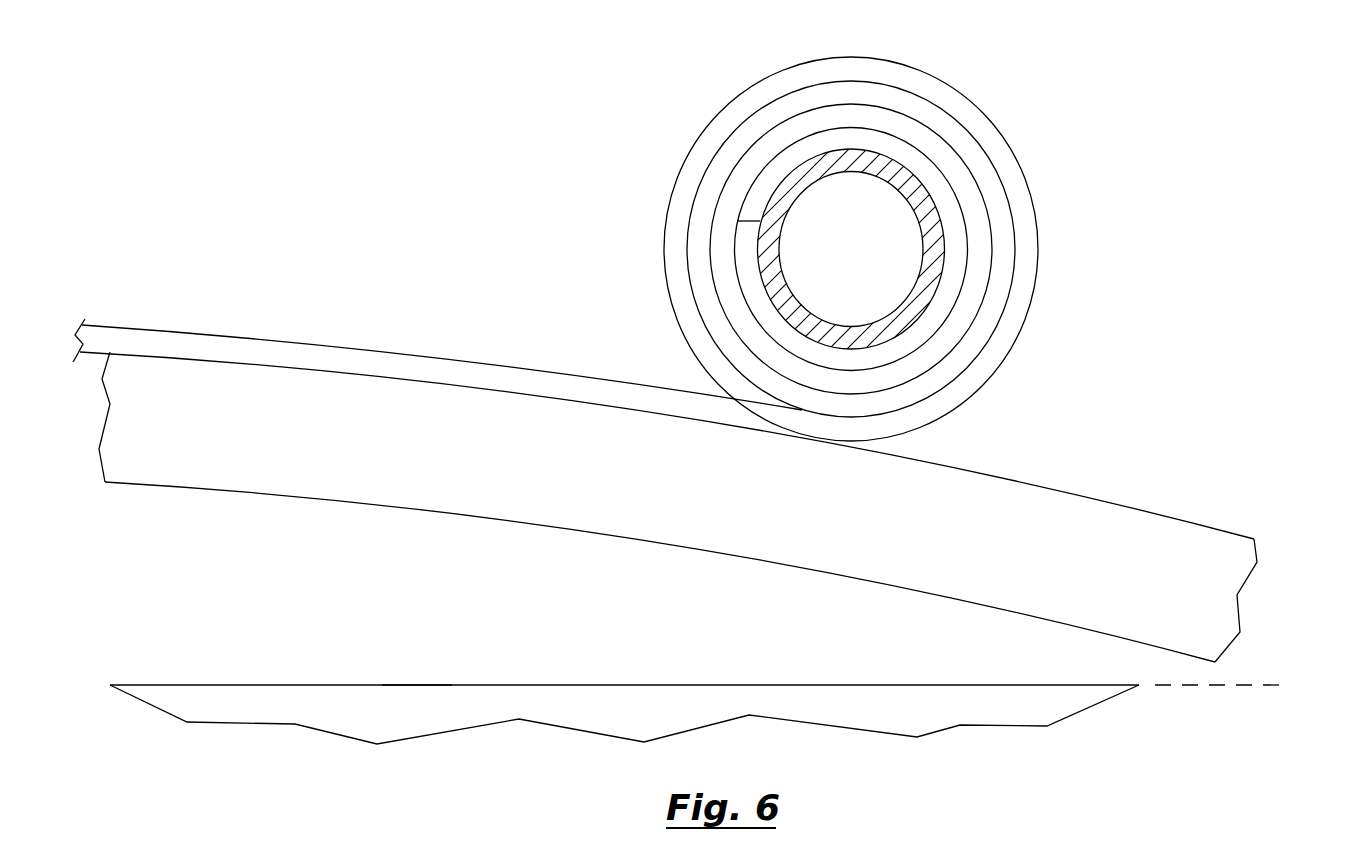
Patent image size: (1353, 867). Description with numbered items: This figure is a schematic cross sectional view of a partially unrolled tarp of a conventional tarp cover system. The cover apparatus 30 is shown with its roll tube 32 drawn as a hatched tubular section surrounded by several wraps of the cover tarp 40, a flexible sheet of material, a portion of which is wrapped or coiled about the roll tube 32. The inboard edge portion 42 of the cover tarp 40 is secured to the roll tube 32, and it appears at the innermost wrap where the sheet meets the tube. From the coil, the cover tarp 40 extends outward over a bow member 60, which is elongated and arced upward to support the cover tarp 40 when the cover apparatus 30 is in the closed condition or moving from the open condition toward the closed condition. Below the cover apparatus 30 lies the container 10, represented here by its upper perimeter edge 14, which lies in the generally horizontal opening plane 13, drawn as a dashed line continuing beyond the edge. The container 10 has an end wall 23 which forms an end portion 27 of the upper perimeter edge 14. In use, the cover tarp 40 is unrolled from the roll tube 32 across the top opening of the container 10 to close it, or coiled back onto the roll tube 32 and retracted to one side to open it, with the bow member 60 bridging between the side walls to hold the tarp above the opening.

The container 10 is at (726, 698).
The opening plane 13 is at (1195, 685).
The upper perimeter edge 14 is at (598, 683).
The end wall 23 is at (355, 718).
The end portion 27 is at (412, 683).
The cover apparatus 30 is at (1045, 300).
The roll tube 32 is at (930, 232).
The cover tarp 40 is at (1000, 100).
The inboard edge portion 42 is at (748, 218).
The bow member 60 is at (1037, 503).